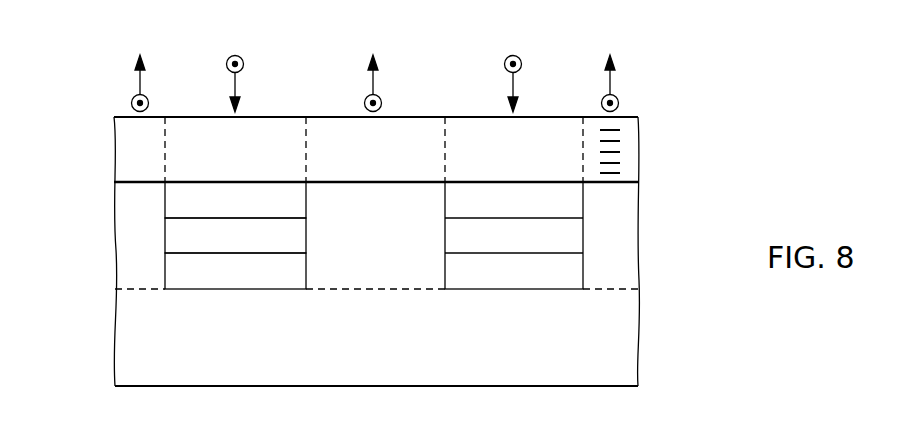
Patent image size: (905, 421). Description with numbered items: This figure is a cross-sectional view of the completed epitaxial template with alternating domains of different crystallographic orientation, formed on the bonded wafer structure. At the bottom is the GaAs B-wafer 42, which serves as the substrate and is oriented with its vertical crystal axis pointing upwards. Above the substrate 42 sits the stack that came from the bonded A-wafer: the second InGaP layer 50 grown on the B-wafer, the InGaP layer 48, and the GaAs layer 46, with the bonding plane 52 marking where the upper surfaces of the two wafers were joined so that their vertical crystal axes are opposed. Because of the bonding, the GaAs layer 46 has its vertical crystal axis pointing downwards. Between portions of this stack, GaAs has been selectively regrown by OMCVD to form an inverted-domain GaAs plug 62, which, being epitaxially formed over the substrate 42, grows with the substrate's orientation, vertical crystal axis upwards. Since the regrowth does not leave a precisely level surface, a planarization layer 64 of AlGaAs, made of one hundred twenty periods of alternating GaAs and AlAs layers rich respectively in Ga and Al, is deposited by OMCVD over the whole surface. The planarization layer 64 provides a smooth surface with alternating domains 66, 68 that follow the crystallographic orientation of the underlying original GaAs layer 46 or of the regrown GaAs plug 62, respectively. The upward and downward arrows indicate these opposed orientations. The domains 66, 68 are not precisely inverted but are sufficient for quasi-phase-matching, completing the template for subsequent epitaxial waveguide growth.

The B-wafer 42 is at (127, 351).
The GaAs layer 46 is at (172, 200).
The InGaP layer 48 is at (172, 235).
The second InGaP layer 50 is at (172, 270).
The bonding plane 52 is at (565, 253).
The inverted-domain GaAs plug 62 is at (393, 223).
The planarization layer 64 is at (127, 150).
The domain 66 is at (205, 125).
The domain 68 is at (348, 125).